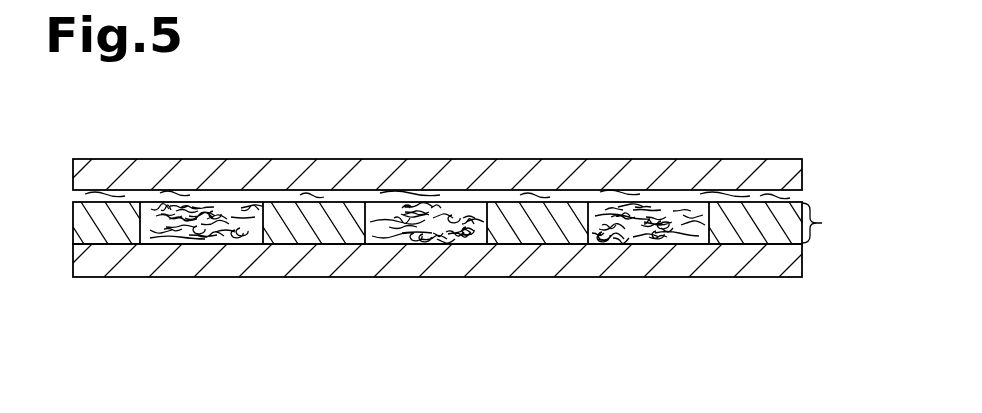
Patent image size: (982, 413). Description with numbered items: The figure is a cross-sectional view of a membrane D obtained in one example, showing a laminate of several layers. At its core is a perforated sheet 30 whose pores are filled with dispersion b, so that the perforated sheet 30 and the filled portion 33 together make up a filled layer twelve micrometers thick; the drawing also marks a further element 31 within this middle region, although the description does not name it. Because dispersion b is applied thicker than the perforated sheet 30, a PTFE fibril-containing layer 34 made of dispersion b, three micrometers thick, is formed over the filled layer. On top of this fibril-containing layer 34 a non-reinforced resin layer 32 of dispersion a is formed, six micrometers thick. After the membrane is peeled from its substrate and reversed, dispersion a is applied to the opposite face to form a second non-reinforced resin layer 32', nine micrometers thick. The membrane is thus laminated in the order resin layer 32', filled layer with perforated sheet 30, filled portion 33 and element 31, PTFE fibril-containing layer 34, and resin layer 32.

The perforated sheet 30 is at (537, 222).
The adsorbent 31 is at (462, 220).
The resin layer 32 is at (436, 161).
The resin layer 32' is at (446, 288).
The filled portion 33 is at (755, 194).
The PTFE fibril-containing layer 34 is at (470, 223).